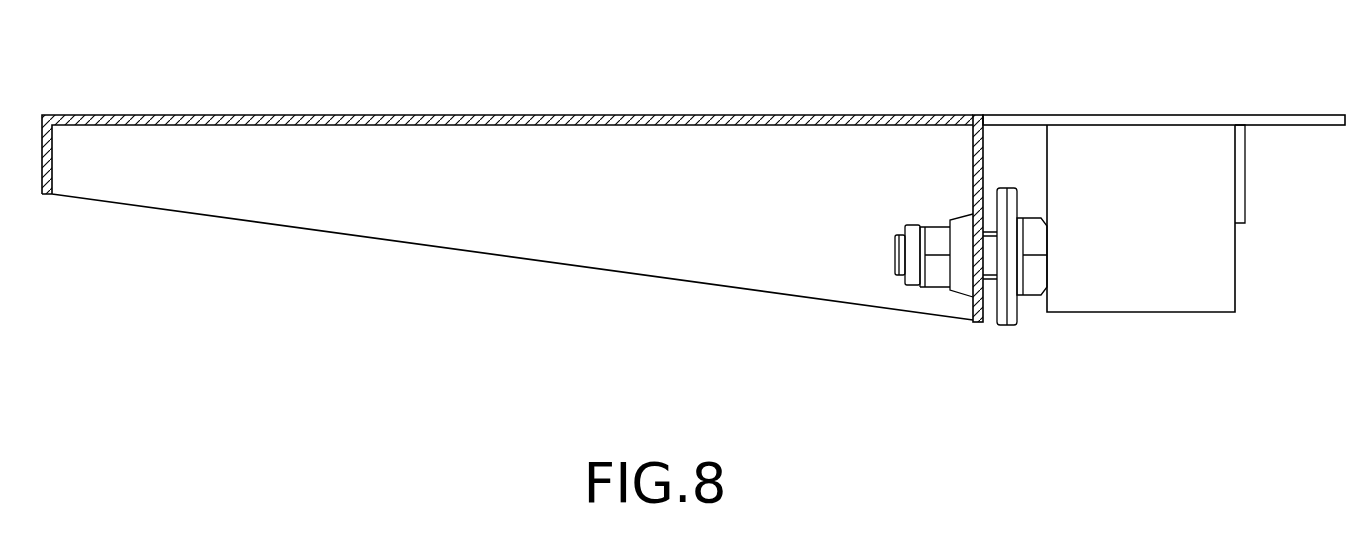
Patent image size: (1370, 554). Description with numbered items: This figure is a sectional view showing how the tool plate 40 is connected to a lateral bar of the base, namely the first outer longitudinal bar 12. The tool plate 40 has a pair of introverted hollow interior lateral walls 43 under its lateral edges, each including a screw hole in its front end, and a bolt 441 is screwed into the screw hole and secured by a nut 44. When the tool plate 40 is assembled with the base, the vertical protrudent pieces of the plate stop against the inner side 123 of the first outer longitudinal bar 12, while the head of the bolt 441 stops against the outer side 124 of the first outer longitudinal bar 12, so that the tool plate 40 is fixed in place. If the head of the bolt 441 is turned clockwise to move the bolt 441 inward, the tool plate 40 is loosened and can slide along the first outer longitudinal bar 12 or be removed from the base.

The tool plate 40 is at (742, 118).
The introverted hollow interior lateral wall 43 is at (987, 316).
The nut 44 is at (940, 270).
The bolt 441 is at (895, 272).
The outer side of the first outer longitudinal bar 124 is at (1045, 166).
The first outer longitudinal bar 12 is at (1153, 250).
The inner side of the first outer longitudinal bar 123 is at (1235, 276).